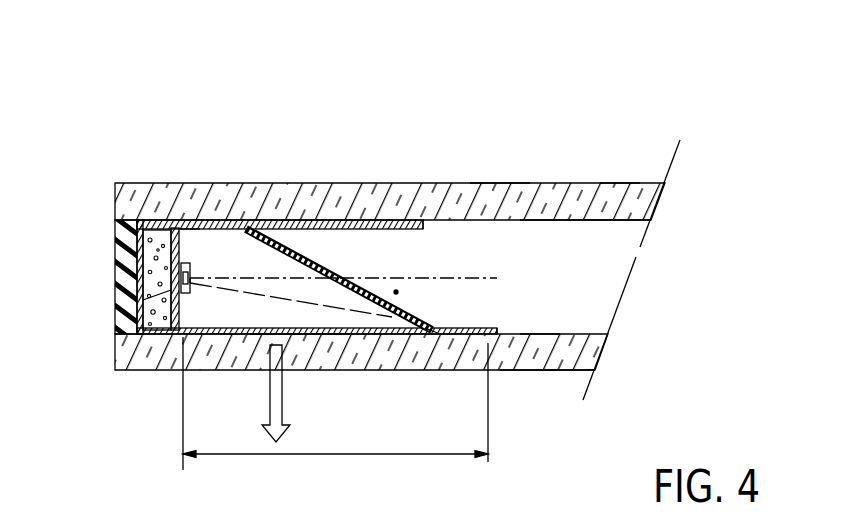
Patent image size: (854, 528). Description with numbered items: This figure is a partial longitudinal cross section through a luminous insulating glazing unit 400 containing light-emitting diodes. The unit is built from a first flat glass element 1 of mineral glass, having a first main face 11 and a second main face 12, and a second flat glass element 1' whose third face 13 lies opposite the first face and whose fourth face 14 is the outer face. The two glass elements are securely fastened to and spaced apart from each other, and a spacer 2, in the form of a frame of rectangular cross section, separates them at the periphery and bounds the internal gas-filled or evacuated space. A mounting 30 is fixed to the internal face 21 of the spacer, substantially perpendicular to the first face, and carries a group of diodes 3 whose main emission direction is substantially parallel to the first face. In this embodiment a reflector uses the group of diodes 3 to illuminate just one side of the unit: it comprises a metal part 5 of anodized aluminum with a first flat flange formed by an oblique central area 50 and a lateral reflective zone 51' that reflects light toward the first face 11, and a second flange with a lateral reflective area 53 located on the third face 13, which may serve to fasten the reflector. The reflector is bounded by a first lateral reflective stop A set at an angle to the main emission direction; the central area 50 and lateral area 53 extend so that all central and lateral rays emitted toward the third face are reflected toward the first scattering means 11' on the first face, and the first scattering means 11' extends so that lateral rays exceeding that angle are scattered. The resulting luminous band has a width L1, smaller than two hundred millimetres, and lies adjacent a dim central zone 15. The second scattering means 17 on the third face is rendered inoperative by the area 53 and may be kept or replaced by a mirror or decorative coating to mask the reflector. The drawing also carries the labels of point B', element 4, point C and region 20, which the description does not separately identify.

The luminous insulating glazing unit 400 is at (630, 152).
The fourth face 14 is at (558, 182).
The second flat glass element 1' is at (500, 158).
The second scattering means 17 is at (405, 222).
The oblique central area 50 is at (343, 277).
The lateral reflective area 53 is at (225, 222).
The point B' is at (187, 174).
The end wall 4 is at (118, 242).
The spacer 2 is at (147, 268).
The mounting 30 is at (170, 290).
The internal face of the spacer 21 is at (185, 325).
The light-emitting diodes 3 is at (190, 278).
The first scattering means 11' is at (300, 378).
The lateral reflective zone 51' is at (317, 375).
The first lateral reflective stop A is at (425, 333).
The point C is at (498, 334).
The first flat glass element 1 is at (530, 386).
The second main face 12 is at (558, 370).
The third face 13 is at (620, 220).
The flow channel 20 is at (587, 273).
The first main face 11 is at (398, 333).
The dim central zone 15 is at (530, 220).
The metal part of the reflector 5 is at (396, 292).
The width of the first luminous zone L1 is at (335, 409).